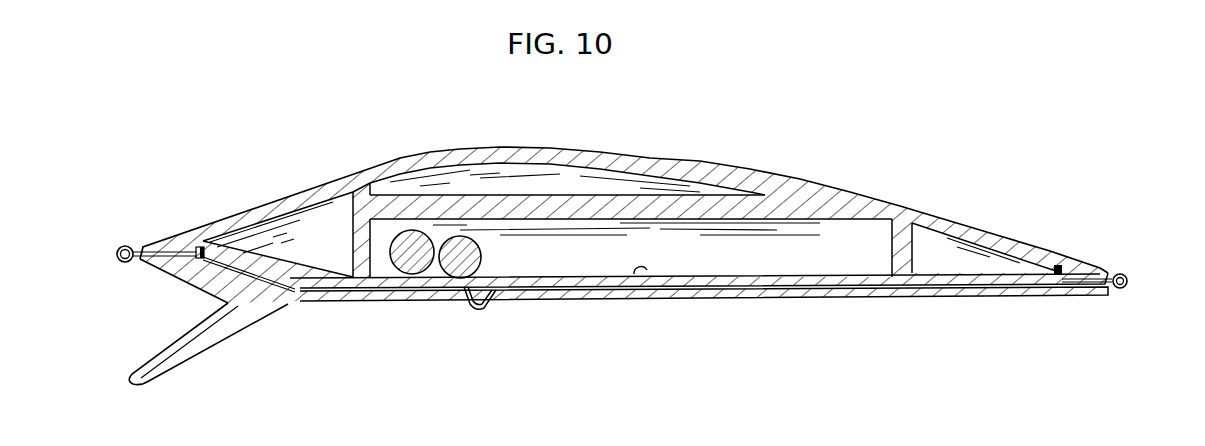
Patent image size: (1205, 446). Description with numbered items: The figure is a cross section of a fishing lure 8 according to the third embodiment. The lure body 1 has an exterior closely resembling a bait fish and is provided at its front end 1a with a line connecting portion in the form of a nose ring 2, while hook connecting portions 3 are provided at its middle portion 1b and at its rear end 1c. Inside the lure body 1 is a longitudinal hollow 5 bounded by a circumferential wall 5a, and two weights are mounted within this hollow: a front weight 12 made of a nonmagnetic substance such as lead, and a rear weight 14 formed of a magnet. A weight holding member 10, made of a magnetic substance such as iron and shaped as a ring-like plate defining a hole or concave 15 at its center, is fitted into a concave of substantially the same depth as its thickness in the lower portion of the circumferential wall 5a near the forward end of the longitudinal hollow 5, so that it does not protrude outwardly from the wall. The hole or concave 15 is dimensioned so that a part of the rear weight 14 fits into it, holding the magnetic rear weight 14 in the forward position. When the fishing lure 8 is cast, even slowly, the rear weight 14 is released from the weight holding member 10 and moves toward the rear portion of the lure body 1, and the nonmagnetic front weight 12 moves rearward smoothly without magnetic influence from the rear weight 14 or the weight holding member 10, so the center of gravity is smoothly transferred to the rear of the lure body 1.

The lure body 1 is at (803, 178).
The front end 1a is at (154, 243).
The middle portion 1b is at (543, 299).
The rear end 1c is at (1102, 270).
The nose ring 2 is at (113, 257).
The hook connecting portions 3 is at (483, 311).
The longitudinal hollow 5 is at (686, 236).
The circumferential wall 5a is at (645, 268).
The fishing lure 8 is at (933, 155).
The weight holding member 10 is at (499, 301).
The front weight 12 is at (408, 277).
The rear weight 14 is at (455, 277).
The hole or concave 15 is at (472, 295).